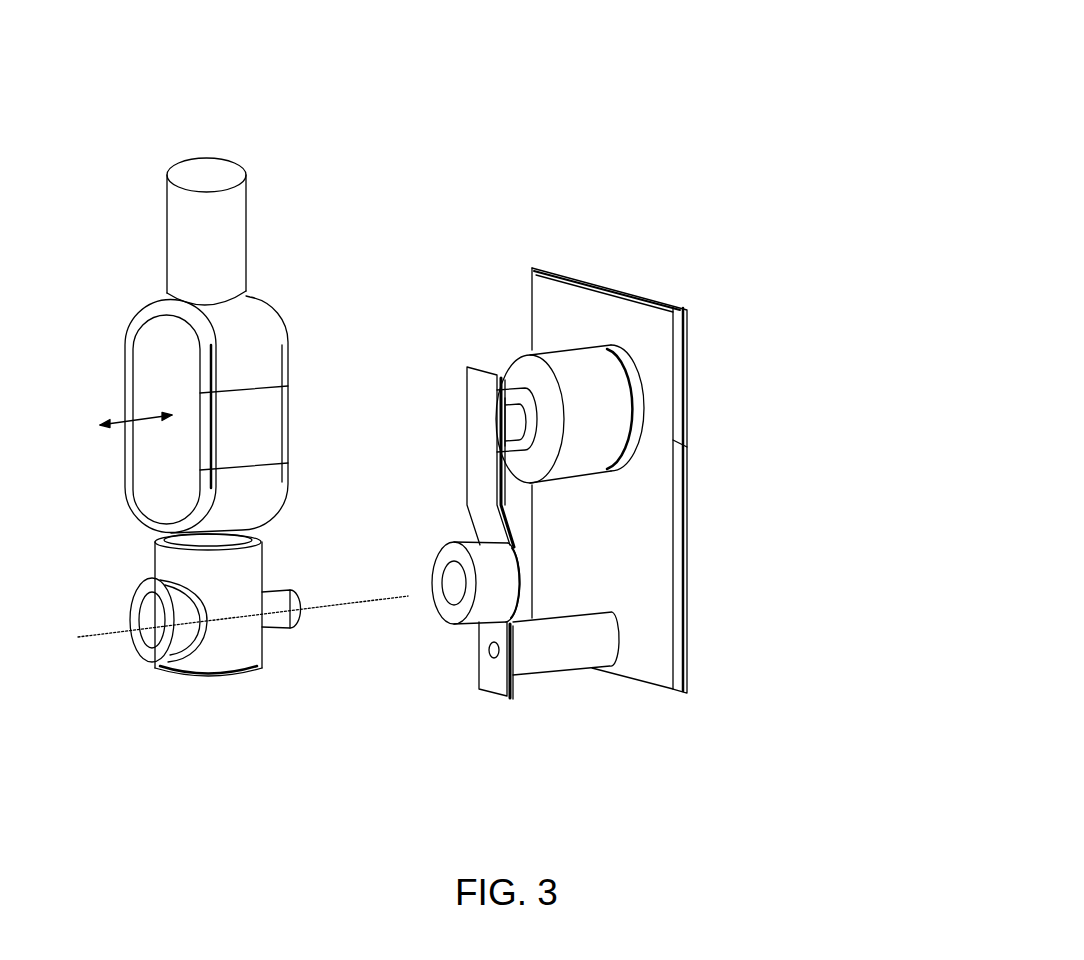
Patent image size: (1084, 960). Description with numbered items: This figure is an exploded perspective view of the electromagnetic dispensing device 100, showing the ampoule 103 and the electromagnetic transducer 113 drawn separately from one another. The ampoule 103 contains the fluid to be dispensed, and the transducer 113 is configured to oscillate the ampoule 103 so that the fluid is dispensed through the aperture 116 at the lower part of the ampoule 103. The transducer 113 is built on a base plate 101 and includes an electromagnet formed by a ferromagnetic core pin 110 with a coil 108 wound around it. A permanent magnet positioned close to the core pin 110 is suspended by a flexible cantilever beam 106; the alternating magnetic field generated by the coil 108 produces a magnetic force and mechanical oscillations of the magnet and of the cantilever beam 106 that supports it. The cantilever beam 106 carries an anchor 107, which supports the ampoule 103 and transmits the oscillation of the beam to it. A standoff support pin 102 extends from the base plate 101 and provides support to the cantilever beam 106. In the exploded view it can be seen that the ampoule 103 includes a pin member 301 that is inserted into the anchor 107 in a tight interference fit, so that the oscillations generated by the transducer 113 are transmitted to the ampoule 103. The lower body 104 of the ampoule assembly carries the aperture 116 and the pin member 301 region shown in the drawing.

The electromagnetic dispensing device 100 is at (505, 50).
The base plate 101 is at (628, 283).
The standoff support pin 102 is at (568, 670).
The ampoule 103 is at (245, 172).
The clamp body 104 is at (195, 680).
The flexible cantilever beam 106 is at (513, 697).
The anchor 107 is at (448, 625).
The coil 108 is at (687, 447).
The ferromagnetic core pin 110 is at (515, 380).
The electromagnetic transducer 113 is at (567, 238).
The aperture 116 is at (130, 612).
The pin member 301 is at (270, 632).